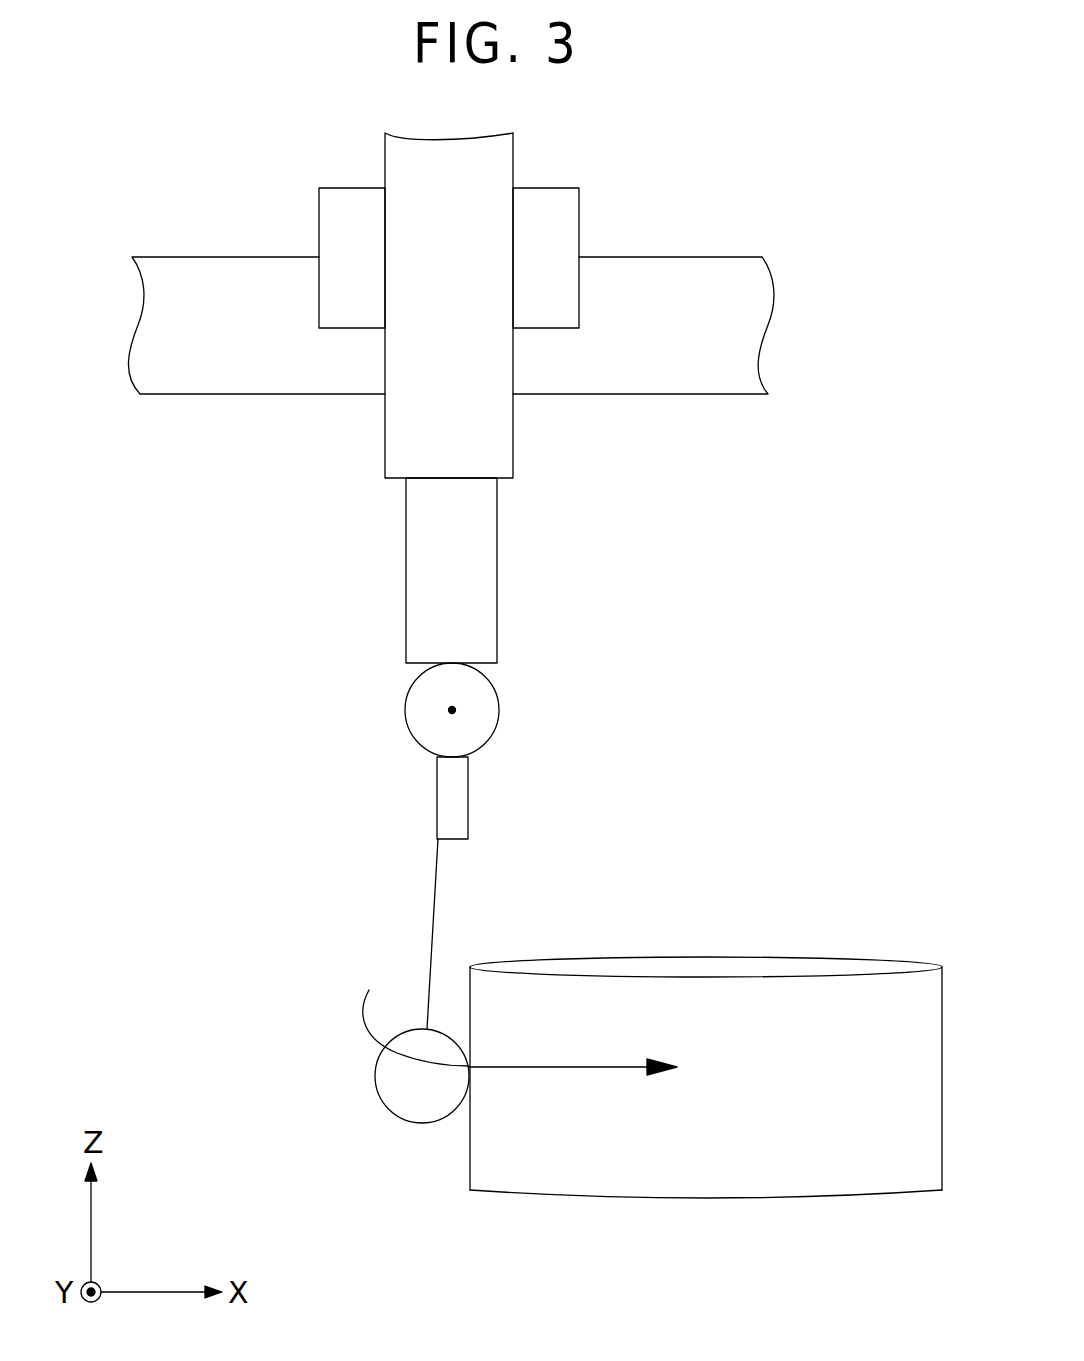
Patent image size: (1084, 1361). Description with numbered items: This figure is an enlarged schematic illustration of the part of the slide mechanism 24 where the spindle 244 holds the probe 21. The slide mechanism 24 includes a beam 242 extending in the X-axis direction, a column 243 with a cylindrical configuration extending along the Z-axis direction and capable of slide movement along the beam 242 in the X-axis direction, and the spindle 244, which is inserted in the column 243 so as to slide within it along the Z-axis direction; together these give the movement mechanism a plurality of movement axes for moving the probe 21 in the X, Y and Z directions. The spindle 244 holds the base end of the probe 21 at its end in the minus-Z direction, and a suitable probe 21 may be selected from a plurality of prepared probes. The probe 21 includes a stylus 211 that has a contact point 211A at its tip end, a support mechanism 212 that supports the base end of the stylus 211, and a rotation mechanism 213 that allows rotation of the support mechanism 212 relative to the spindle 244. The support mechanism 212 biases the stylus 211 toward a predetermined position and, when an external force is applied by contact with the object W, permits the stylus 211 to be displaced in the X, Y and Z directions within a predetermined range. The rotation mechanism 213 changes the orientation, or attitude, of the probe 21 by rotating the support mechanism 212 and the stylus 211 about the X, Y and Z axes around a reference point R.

The slide mechanism 24 is at (464, 392).
The beam 242 is at (709, 268).
The column 243 is at (497, 169).
The spindle 244 is at (480, 568).
The probe 21 is at (441, 870).
The rotation mechanism 213 is at (422, 710).
The reference point R is at (460, 710).
The support mechanism 212 is at (470, 820).
The stylus 211 is at (428, 952).
The contact point 211A is at (375, 1070).
The object W is at (843, 965).